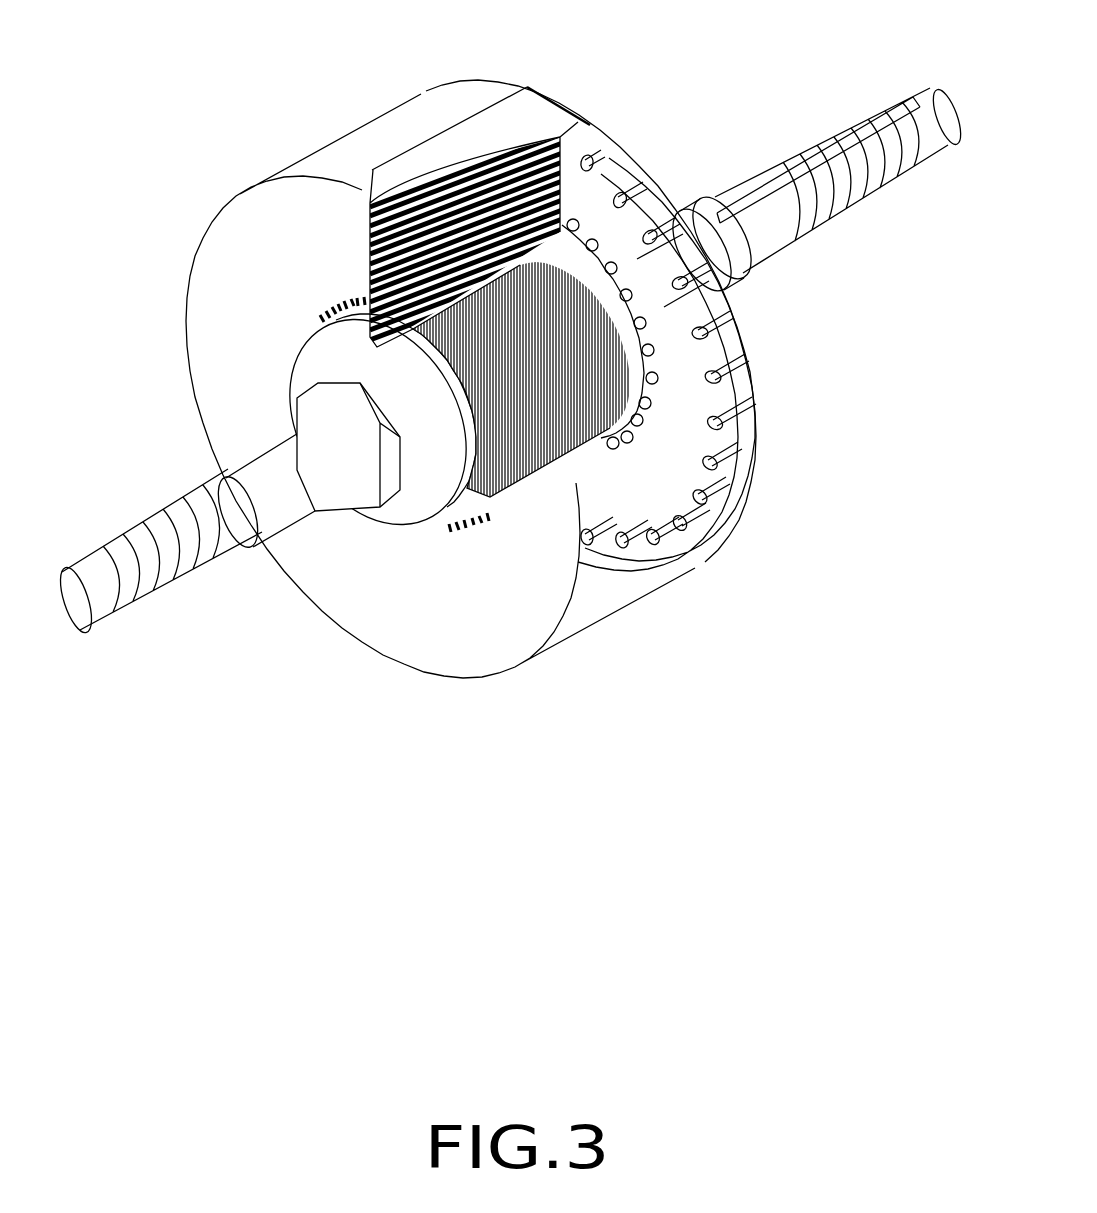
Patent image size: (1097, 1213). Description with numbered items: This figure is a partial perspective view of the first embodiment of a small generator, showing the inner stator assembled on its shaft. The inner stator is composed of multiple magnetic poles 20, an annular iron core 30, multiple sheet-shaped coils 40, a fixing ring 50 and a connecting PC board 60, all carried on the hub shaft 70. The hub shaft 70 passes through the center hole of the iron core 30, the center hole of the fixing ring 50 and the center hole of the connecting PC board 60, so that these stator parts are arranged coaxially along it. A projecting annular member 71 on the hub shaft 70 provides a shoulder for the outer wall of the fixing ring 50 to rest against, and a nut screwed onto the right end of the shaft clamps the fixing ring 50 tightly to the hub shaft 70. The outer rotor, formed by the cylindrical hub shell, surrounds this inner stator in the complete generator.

The magnetic poles 20 is at (378, 158).
The annular iron core 30 is at (527, 510).
The sheet-shaped coils 40 is at (365, 245).
The fixing ring 50 is at (406, 545).
The connecting PC board 60 is at (610, 126).
The hub shaft 70 is at (820, 232).
The projecting annular member 71 is at (360, 507).